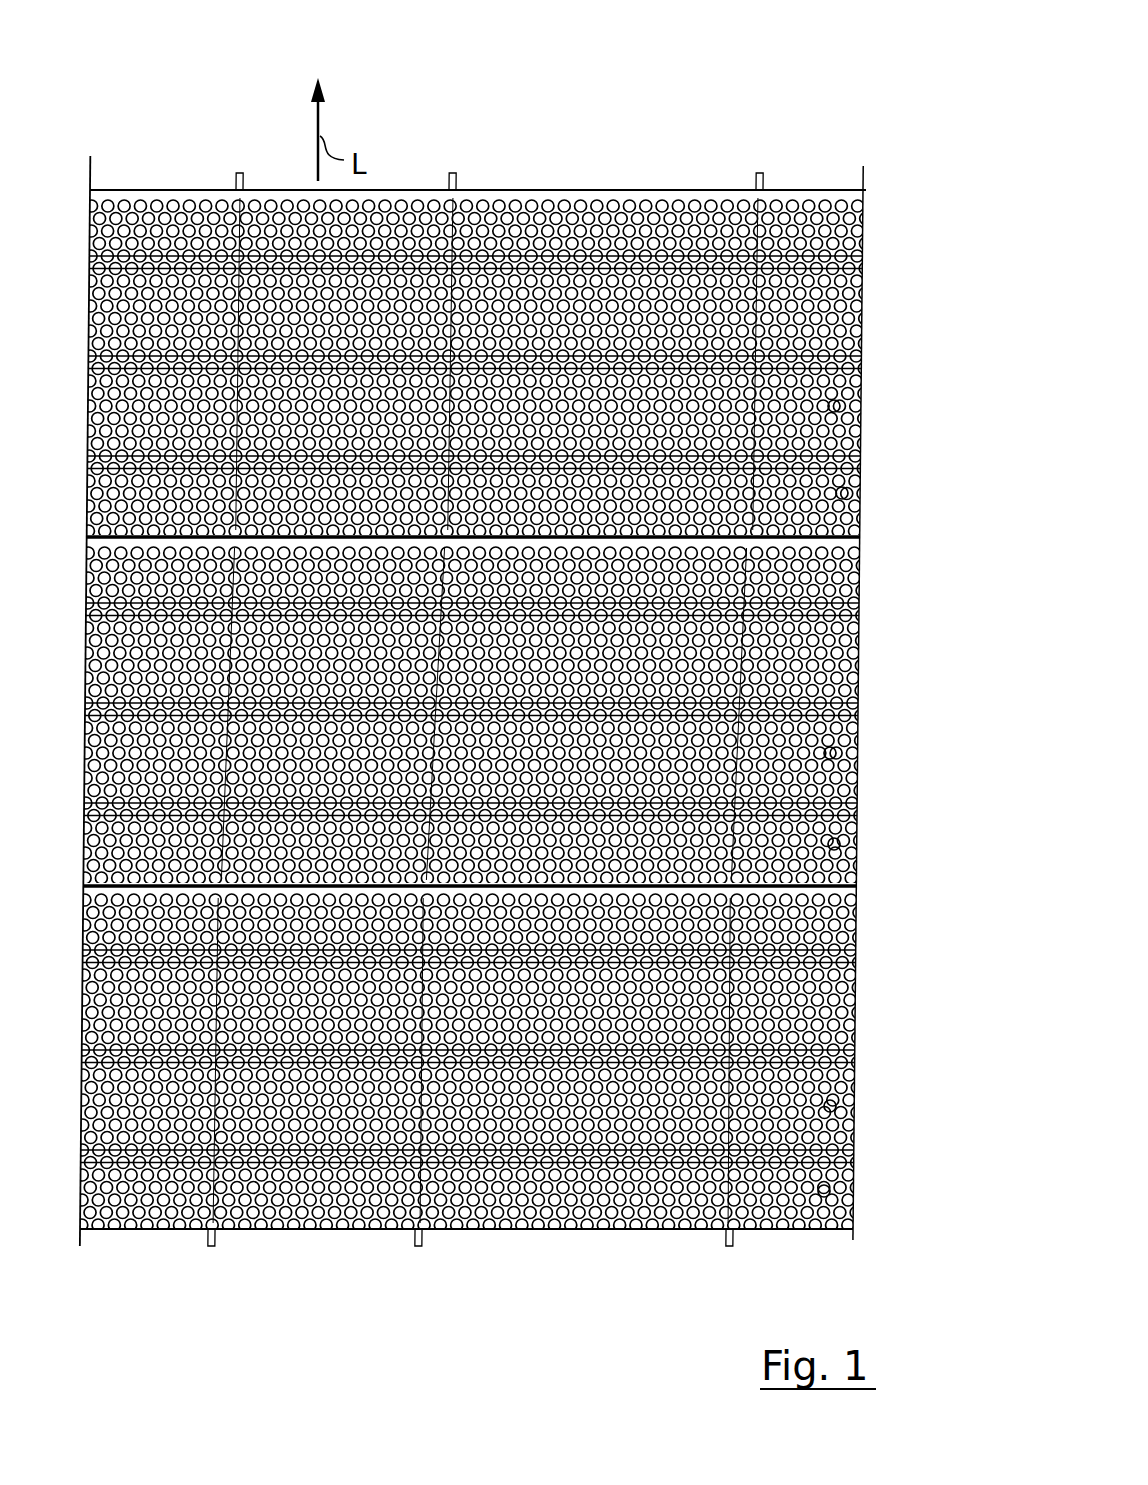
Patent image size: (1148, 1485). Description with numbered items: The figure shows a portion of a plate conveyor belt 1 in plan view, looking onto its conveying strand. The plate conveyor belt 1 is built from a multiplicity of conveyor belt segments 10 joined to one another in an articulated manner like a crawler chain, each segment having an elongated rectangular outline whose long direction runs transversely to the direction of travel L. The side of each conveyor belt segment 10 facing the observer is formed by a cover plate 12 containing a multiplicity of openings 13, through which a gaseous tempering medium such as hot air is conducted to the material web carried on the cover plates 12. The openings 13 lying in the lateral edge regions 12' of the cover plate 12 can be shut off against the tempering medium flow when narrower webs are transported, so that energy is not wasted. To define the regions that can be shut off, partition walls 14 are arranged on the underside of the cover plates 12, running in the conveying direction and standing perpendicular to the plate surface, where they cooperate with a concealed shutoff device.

The plate conveyor belt 1 is at (599, 136).
The conveyor belt segment 10 is at (866, 305).
The cover plate 12 is at (460, 711).
The lateral edge region 12' is at (880, 740).
The opening 13 is at (838, 482).
The partition wall 14 is at (230, 172).